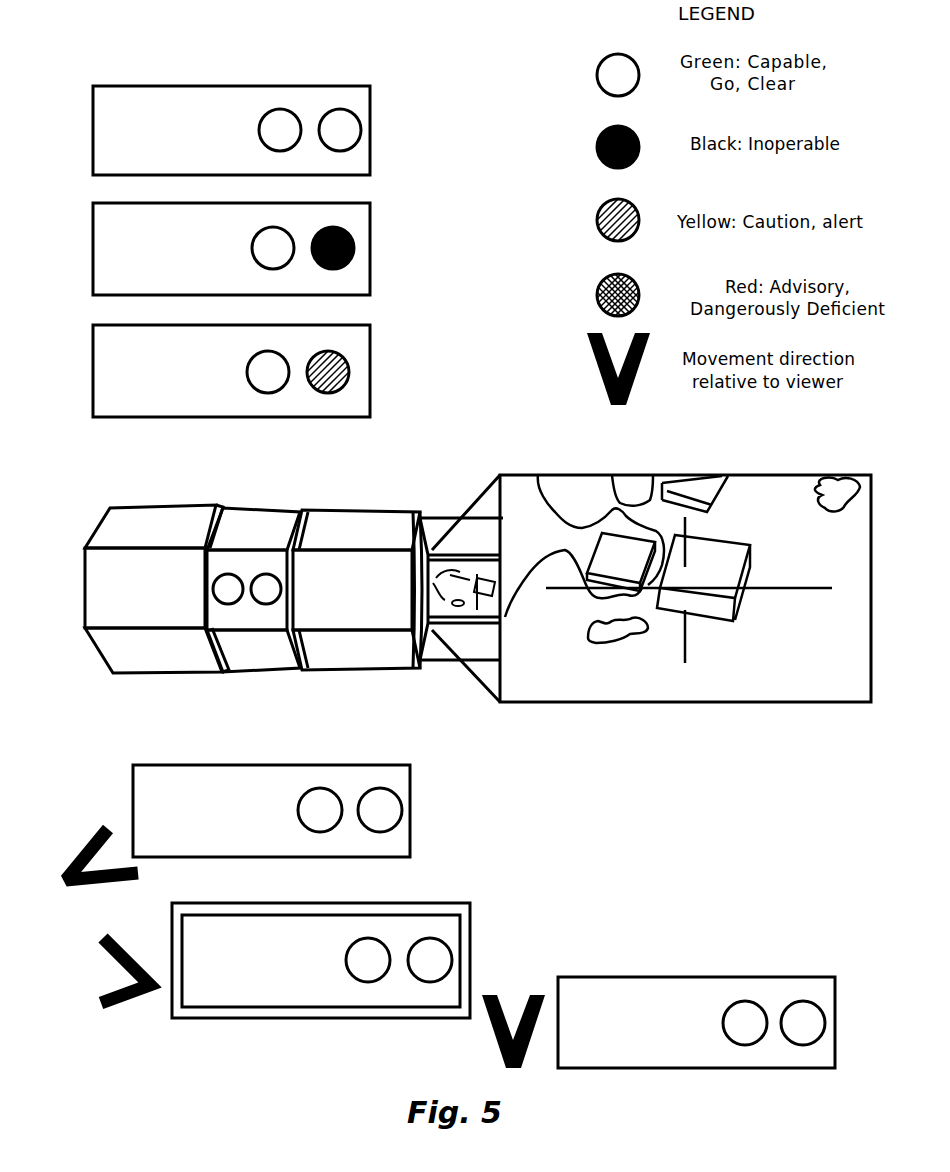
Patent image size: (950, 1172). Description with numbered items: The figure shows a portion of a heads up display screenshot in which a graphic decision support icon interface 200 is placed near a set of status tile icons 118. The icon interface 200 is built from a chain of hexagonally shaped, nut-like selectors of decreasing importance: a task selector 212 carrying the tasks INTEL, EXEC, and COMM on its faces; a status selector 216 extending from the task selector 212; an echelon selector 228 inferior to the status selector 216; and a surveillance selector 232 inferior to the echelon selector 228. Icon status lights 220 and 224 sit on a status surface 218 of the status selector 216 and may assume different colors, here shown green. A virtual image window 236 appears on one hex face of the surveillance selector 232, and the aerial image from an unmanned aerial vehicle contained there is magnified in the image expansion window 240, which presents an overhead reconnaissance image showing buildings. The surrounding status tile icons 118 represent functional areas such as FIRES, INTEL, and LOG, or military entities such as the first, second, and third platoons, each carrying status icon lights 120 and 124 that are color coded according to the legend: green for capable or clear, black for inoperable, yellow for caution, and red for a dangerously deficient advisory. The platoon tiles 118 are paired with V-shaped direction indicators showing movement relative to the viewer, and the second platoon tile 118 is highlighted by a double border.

The status tile icon 118 is at (148, 171).
The status icon light 120 is at (273, 128).
The status icon light 124 is at (333, 128).
The graphic decision support icon interface 200 is at (88, 523).
The task selector 212 is at (83, 618).
The status selector 216 is at (285, 513).
The status surface 218 is at (245, 572).
The icon status light 220 is at (233, 606).
The icon status light 224 is at (253, 573).
The echelon selector 228 is at (333, 512).
The surveillance selector 232 is at (430, 522).
The image window 236 is at (447, 603).
The image expansion window 240 is at (672, 686).